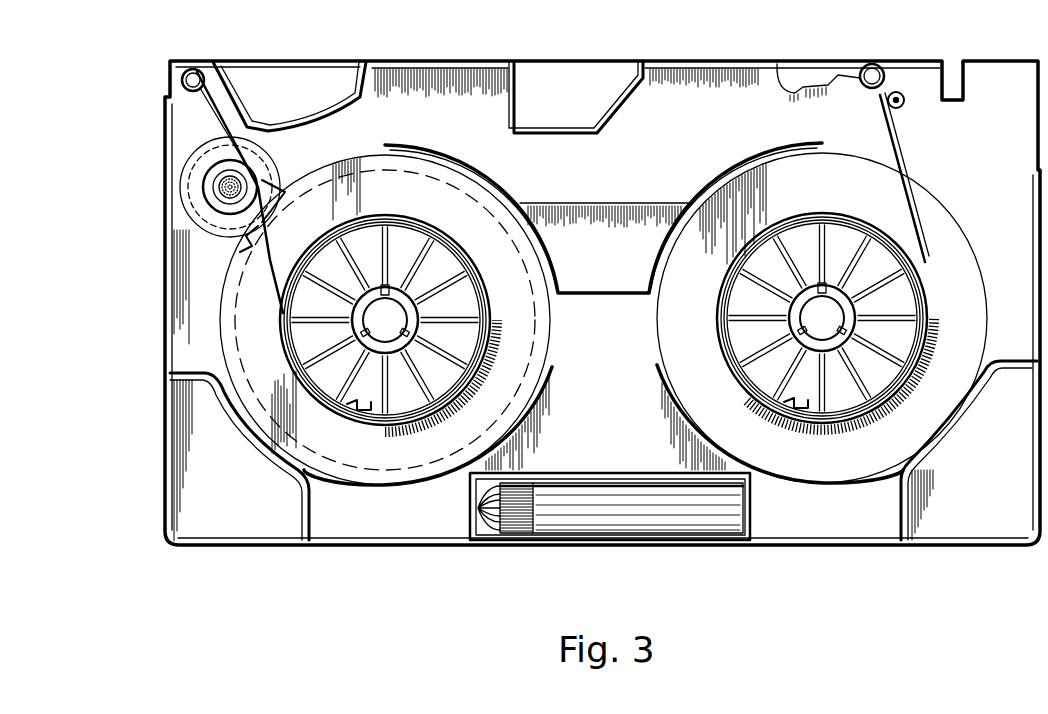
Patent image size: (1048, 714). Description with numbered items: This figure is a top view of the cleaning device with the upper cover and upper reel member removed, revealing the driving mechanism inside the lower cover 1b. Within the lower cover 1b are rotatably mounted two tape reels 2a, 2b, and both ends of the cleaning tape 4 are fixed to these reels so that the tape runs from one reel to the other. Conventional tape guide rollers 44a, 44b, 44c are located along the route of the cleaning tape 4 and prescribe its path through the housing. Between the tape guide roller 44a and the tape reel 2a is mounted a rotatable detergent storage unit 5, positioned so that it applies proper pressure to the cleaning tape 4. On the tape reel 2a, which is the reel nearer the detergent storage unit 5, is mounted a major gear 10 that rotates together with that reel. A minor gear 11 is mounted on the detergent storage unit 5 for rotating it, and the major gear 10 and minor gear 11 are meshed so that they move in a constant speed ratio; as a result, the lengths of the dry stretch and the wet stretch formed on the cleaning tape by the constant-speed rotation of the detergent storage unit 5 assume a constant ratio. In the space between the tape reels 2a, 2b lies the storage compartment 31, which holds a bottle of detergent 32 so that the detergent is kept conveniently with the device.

The lower cover 1b is at (165, 440).
The tape reel 2a is at (348, 503).
The tape reel 2b is at (836, 503).
The cleaning tape 4 is at (291, 60).
The detergent storage unit 5 is at (205, 176).
The major gear 10 is at (210, 303).
The minor gear 11 is at (188, 228).
The storage compartment 31 is at (695, 520).
The bottle of detergent 32 is at (590, 522).
The tape guide roller 44a is at (197, 69).
The tape guide roller 44b is at (876, 64).
The tape guide roller 44c is at (904, 106).